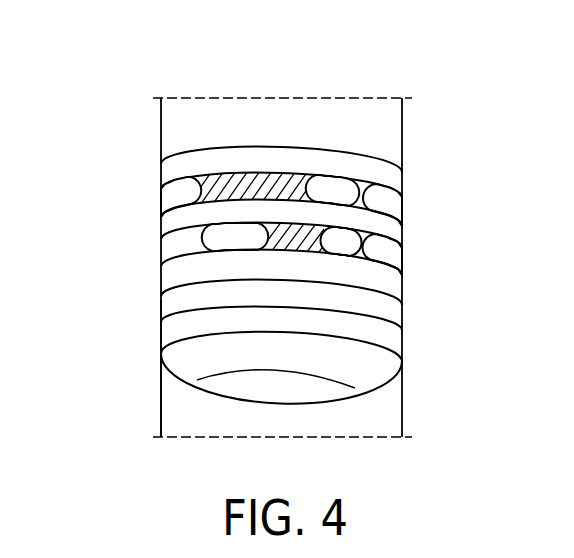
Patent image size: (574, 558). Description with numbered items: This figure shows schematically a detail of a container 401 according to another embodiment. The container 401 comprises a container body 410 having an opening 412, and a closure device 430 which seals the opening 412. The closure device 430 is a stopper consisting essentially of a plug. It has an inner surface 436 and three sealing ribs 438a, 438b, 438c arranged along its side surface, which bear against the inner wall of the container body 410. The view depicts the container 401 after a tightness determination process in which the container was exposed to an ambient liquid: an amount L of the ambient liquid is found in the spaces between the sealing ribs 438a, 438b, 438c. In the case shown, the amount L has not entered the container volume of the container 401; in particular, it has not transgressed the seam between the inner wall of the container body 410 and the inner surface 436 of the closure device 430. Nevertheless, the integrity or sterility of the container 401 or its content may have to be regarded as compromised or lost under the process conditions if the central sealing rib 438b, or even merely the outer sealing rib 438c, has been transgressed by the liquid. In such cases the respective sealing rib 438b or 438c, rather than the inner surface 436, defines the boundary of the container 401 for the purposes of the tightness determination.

The container 401 is at (192, 98).
The container body 410 is at (160, 385).
The opening 412 is at (290, 118).
The closure device 430 is at (367, 156).
The outer sealing rib 438c is at (305, 212).
The central sealing rib 438b is at (403, 237).
The sealing rib 438a is at (403, 295).
The inner surface 436 is at (403, 352).
The amount of ambient liquid L is at (163, 200).